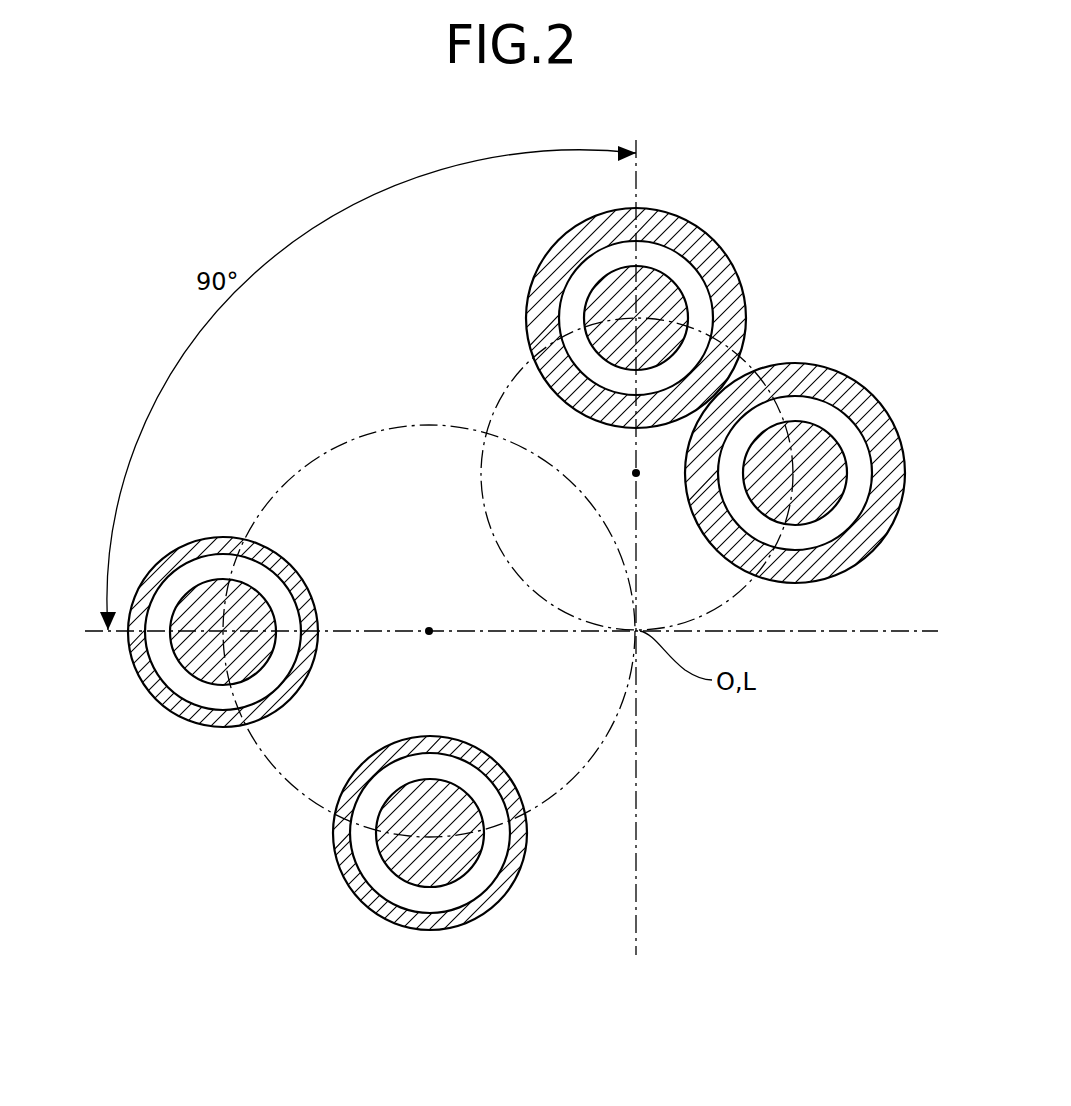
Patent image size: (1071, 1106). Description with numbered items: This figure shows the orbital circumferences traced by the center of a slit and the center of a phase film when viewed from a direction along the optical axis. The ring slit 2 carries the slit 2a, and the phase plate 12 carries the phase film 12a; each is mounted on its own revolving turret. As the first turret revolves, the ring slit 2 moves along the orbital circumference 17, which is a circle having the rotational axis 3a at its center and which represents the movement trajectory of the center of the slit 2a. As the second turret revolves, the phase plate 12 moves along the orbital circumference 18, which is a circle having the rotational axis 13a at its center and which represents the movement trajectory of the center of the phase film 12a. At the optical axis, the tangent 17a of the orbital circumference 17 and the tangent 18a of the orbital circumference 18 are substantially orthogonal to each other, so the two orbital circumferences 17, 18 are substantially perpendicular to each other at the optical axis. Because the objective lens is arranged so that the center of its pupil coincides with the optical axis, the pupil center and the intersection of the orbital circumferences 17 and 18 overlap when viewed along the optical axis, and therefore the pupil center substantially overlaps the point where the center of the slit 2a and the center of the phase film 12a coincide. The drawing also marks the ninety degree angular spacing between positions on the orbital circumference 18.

The ring slit 2 is at (708, 232).
The slit 2a is at (713, 293).
The rotational axis 3a is at (622, 468).
The phase plate 12 is at (152, 698).
The phase film 12a is at (203, 692).
The rotational axis 13a is at (424, 618).
The orbital circumference 17 is at (740, 595).
The tangent 17a is at (900, 640).
The orbital circumference 18 is at (405, 425).
The tangent 18a is at (638, 172).